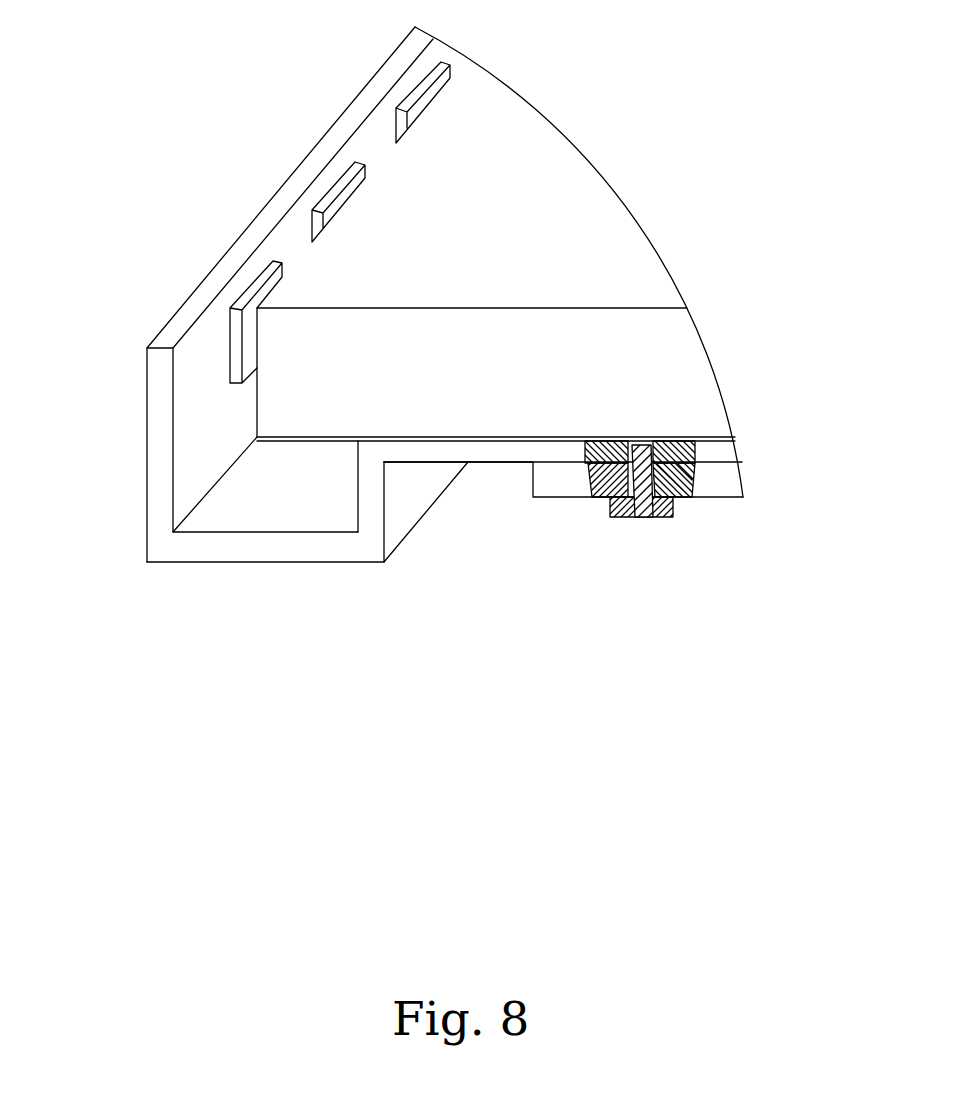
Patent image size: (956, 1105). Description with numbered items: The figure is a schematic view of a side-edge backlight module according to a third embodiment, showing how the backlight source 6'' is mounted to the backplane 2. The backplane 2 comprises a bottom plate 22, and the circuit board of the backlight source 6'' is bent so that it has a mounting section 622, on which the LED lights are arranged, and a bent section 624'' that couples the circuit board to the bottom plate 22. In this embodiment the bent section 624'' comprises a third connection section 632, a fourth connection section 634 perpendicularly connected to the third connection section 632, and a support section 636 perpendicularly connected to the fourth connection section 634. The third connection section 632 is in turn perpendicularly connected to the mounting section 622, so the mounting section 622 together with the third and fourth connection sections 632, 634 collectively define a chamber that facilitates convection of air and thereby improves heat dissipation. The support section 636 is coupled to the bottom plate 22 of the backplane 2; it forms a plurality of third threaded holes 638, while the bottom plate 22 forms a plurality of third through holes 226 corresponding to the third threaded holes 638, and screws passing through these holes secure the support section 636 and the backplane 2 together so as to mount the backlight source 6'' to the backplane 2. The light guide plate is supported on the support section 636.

The backlight source 6'' is at (274, 205).
The backplane 2 is at (572, 269).
The bottom plate 22 is at (738, 483).
The third through holes 226 is at (588, 497).
The third threaded holes 638 is at (689, 497).
The mounting section 622 is at (152, 457).
The bent section 624'' is at (271, 576).
The third connection section 632 is at (252, 550).
The fourth connection section 634 is at (372, 513).
The support section 636 is at (458, 585).